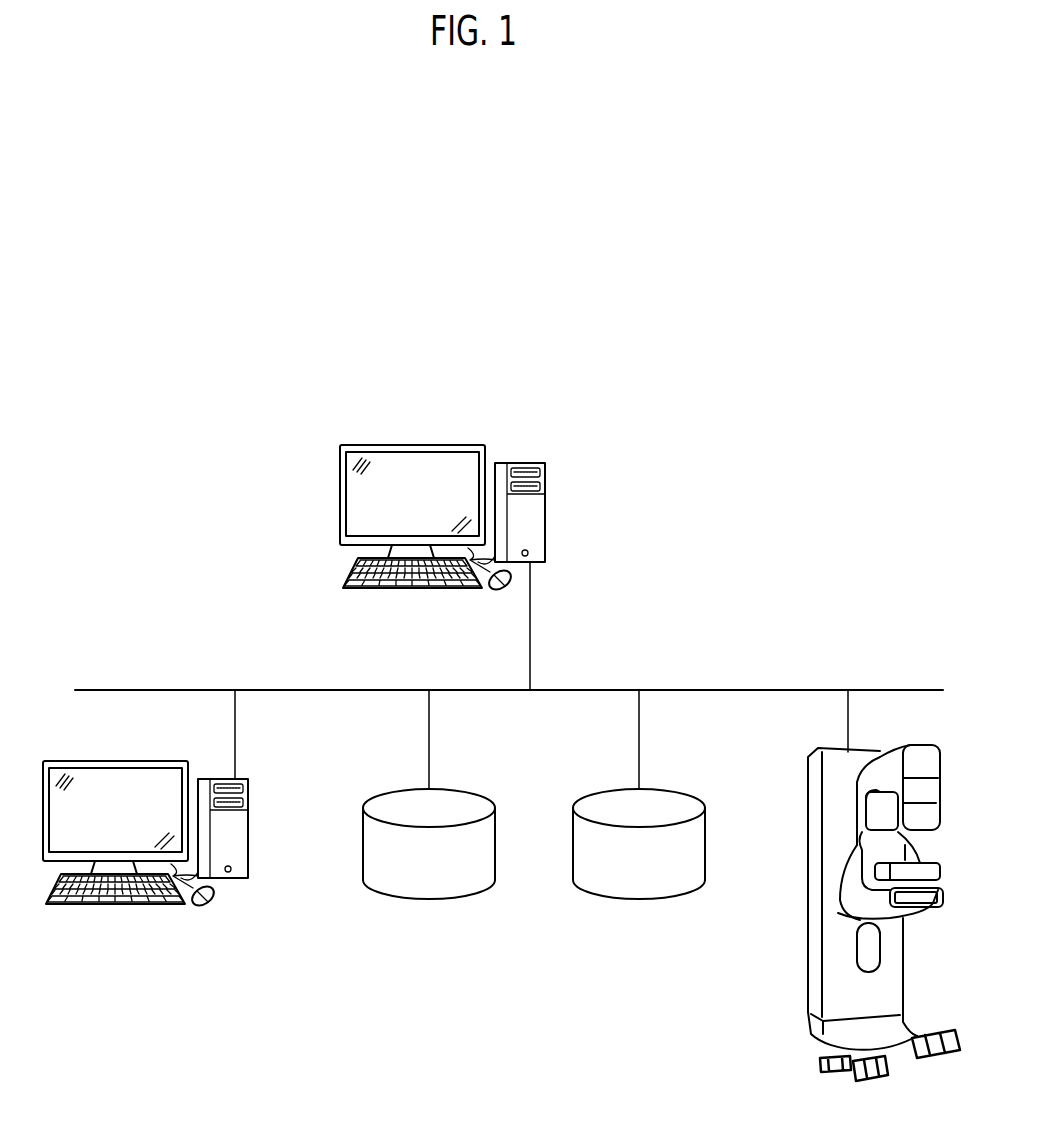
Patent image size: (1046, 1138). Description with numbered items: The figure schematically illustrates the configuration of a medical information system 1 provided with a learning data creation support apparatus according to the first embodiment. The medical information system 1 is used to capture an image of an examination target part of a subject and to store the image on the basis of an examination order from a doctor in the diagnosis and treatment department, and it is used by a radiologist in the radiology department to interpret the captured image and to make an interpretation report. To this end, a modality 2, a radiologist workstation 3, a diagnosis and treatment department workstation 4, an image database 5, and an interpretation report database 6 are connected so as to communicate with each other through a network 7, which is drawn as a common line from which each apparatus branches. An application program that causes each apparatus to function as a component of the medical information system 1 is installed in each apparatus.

The medical information system 1 is at (727, 404).
The modality 2 is at (815, 1042).
The radiologist workstation 3 is at (249, 881).
The diagnosis and treatment department workstation 4 is at (535, 462).
The image database 5 is at (473, 897).
The interpretation report database 6 is at (683, 897).
The network 7 is at (718, 690).